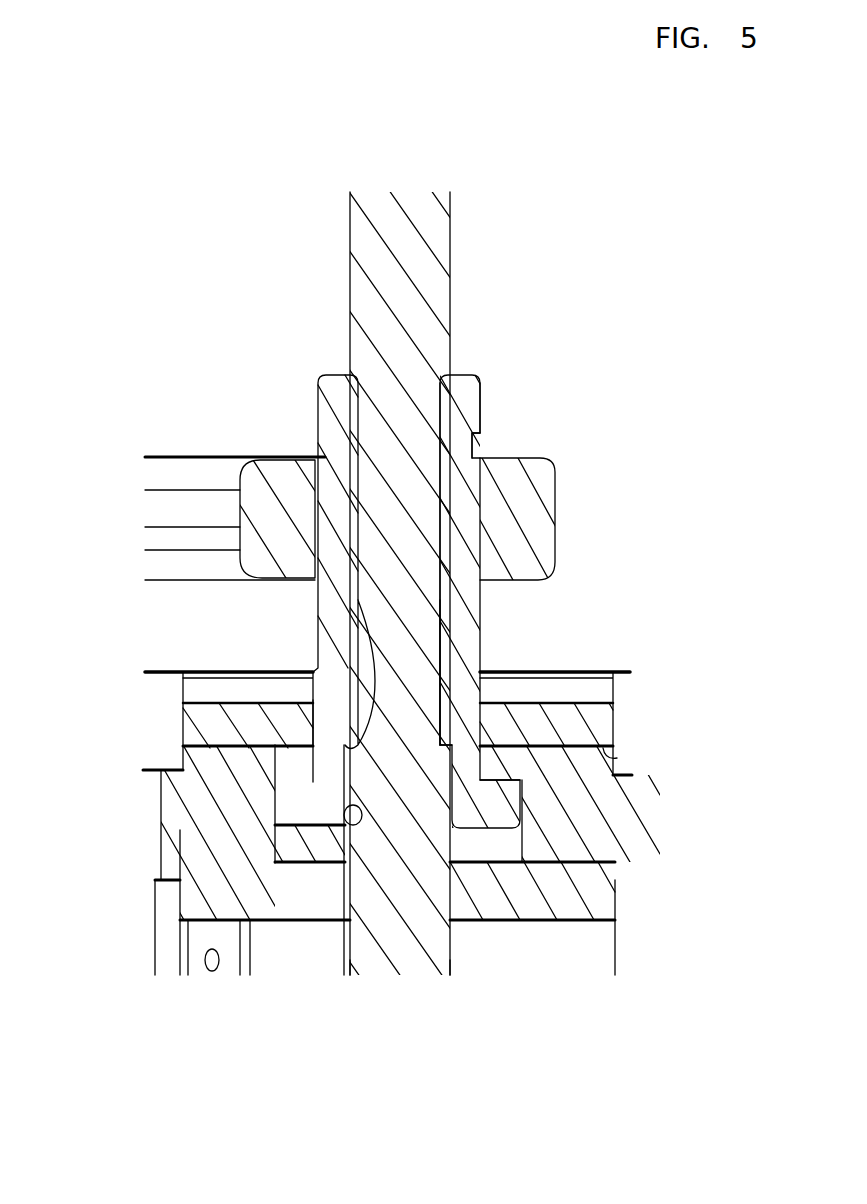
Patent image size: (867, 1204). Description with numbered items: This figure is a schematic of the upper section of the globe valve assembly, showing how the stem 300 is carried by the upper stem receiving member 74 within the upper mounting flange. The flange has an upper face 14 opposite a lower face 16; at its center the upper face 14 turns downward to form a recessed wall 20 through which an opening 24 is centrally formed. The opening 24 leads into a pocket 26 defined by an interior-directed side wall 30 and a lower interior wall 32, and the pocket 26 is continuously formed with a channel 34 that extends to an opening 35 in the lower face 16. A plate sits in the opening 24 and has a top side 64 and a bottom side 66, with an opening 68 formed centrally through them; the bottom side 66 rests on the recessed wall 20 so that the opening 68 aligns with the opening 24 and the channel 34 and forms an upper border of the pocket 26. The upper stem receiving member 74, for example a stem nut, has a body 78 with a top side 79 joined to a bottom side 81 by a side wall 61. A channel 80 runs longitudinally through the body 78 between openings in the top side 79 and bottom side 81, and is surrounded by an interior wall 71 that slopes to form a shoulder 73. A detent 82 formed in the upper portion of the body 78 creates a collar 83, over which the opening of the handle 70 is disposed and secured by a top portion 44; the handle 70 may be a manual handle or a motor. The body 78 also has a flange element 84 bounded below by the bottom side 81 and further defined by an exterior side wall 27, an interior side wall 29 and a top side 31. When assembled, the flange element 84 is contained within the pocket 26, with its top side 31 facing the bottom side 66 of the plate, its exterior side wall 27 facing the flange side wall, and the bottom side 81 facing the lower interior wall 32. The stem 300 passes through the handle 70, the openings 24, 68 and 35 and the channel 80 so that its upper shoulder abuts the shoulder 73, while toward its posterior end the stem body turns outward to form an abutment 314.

The stem 300 is at (469, 200).
The upper stem receiving member 74 is at (500, 360).
The channel 80 is at (446, 382).
The top portion 44 is at (486, 400).
The detent 82 is at (478, 435).
The interior wall 71 is at (440, 612).
The shoulder 73 is at (455, 745).
The top side 79 is at (336, 371).
The abutment 314 is at (352, 608).
The handle 70 is at (144, 445).
The collar 83 is at (324, 455).
The body 78 is at (324, 537).
The side wall 61 is at (466, 568).
The upper face 14 is at (575, 670).
The recessed wall 20 is at (205, 730).
The top side 64 is at (218, 703).
The opening 68 is at (312, 707).
The opening 24 is at (615, 745).
The bottom side 66 is at (618, 757).
The top side 31 is at (305, 780).
The flange element 84 is at (291, 812).
The interior side wall 29 is at (308, 828).
The interior-directed side wall 30 is at (305, 853).
The bottom side 81 is at (275, 868).
The opening 35 is at (340, 927).
The pocket 26 is at (505, 845).
The exterior side wall 27 is at (522, 815).
The lower interior wall 32 is at (470, 862).
The lower face 16 is at (568, 920).
The channel 34 is at (452, 966).